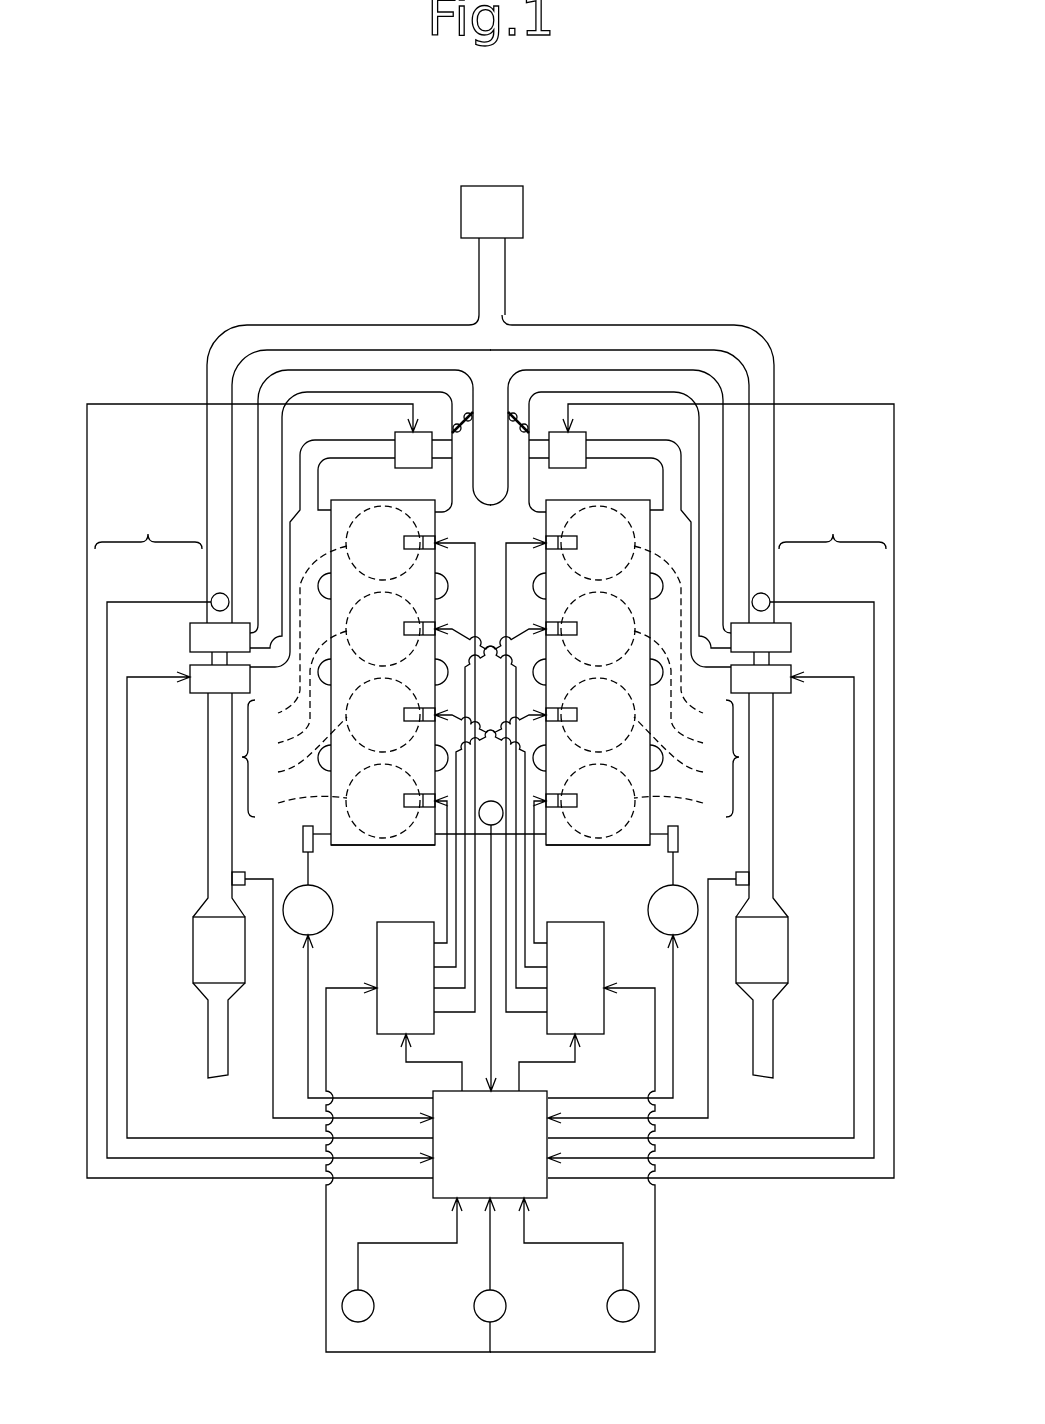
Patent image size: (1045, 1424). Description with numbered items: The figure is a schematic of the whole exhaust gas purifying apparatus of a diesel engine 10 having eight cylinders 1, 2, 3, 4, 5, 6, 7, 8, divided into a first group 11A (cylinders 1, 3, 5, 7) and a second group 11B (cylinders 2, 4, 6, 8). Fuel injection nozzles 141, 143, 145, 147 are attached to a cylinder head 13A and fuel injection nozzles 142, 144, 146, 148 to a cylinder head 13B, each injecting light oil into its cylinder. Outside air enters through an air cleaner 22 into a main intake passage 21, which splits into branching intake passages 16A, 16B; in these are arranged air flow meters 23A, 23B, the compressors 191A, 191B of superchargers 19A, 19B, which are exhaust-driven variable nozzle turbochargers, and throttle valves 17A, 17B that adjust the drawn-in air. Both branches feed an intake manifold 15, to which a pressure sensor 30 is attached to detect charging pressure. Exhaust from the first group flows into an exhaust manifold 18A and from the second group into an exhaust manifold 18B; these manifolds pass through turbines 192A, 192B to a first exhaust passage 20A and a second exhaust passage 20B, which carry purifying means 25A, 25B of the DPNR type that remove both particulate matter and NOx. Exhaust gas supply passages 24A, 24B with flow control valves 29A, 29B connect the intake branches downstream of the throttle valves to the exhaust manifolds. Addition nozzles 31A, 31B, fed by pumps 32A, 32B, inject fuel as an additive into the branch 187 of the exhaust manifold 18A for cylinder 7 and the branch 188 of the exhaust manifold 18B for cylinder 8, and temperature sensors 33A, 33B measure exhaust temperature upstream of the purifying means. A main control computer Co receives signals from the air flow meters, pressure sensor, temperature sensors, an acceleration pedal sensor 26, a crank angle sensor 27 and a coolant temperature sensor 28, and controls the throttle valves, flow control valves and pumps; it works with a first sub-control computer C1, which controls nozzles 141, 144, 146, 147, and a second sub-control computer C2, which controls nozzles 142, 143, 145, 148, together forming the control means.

The diesel engine 10 is at (218, 271).
The air cleaner 22 is at (524, 204).
The main intake passage 21 is at (506, 260).
The branching intake passage 16A is at (632, 454).
The branching intake passage 16B is at (323, 383).
The throttle valve 17A is at (619, 466).
The throttle valve 17B is at (466, 402).
The intake manifold 15 is at (491, 512).
The flow control valve 29A is at (575, 371).
The flow control valve 29B is at (413, 405).
The exhaust gas supply passage 24A is at (640, 540).
The exhaust gas supply passage 24B is at (384, 445).
The exhaust manifold 18A is at (598, 658).
The exhaust manifold 18B is at (323, 508).
The air flow meter 23A is at (791, 541).
The air flow meter 23B is at (220, 593).
The supercharger 19A is at (832, 524).
The supercharger 19B is at (148, 524).
The compressor 191A is at (782, 603).
The compressor 191B is at (191, 627).
The turbine 192A is at (813, 623).
The turbine 192B is at (190, 663).
The fuel injection nozzle 141 is at (590, 543).
The fuel injection nozzle 142 is at (403, 540).
The fuel injection nozzle 143 is at (590, 629).
The fuel injection nozzle 144 is at (403, 626).
The fuel injection nozzle 145 is at (590, 715).
The fuel injection nozzle 146 is at (403, 712).
The fuel injection nozzle 147 is at (590, 801).
The fuel injection nozzle 148 is at (403, 798).
The cylinder 1 is at (680, 638).
The cylinder 2 is at (301, 638).
The cylinder 3 is at (680, 695).
The cylinder 4 is at (301, 695).
The cylinder 5 is at (680, 752).
The cylinder 6 is at (301, 752).
The cylinder 7 is at (680, 802).
The cylinder 8 is at (301, 802).
The first group 11A is at (780, 758).
The second group 11B is at (247, 757).
The first exhaust passage 20A is at (786, 805).
The second exhaust passage 20B is at (215, 816).
The purifying means 25A is at (794, 997).
The purifying means 25B is at (195, 950).
The temperature sensor 33A is at (785, 878).
The temperature sensor 33B is at (232, 879).
The branch 188 is at (303, 834).
The branch 187 is at (696, 843).
The addition nozzle 31A is at (640, 855).
The addition nozzle 31B is at (316, 851).
The pump 32A is at (656, 928).
The pump 32B is at (327, 922).
The cylinder head 13A is at (595, 868).
The cylinder head 13B is at (426, 847).
The pressure sensor 30 is at (490, 801).
The first sub-control computer C1 is at (597, 982).
The second sub-control computer C2 is at (377, 1026).
The main control computer Co is at (545, 1193).
The acceleration pedal sensor 26 is at (375, 1306).
The crank angle sensor 27 is at (479, 1298).
The coolant temperature sensor 28 is at (579, 1260).